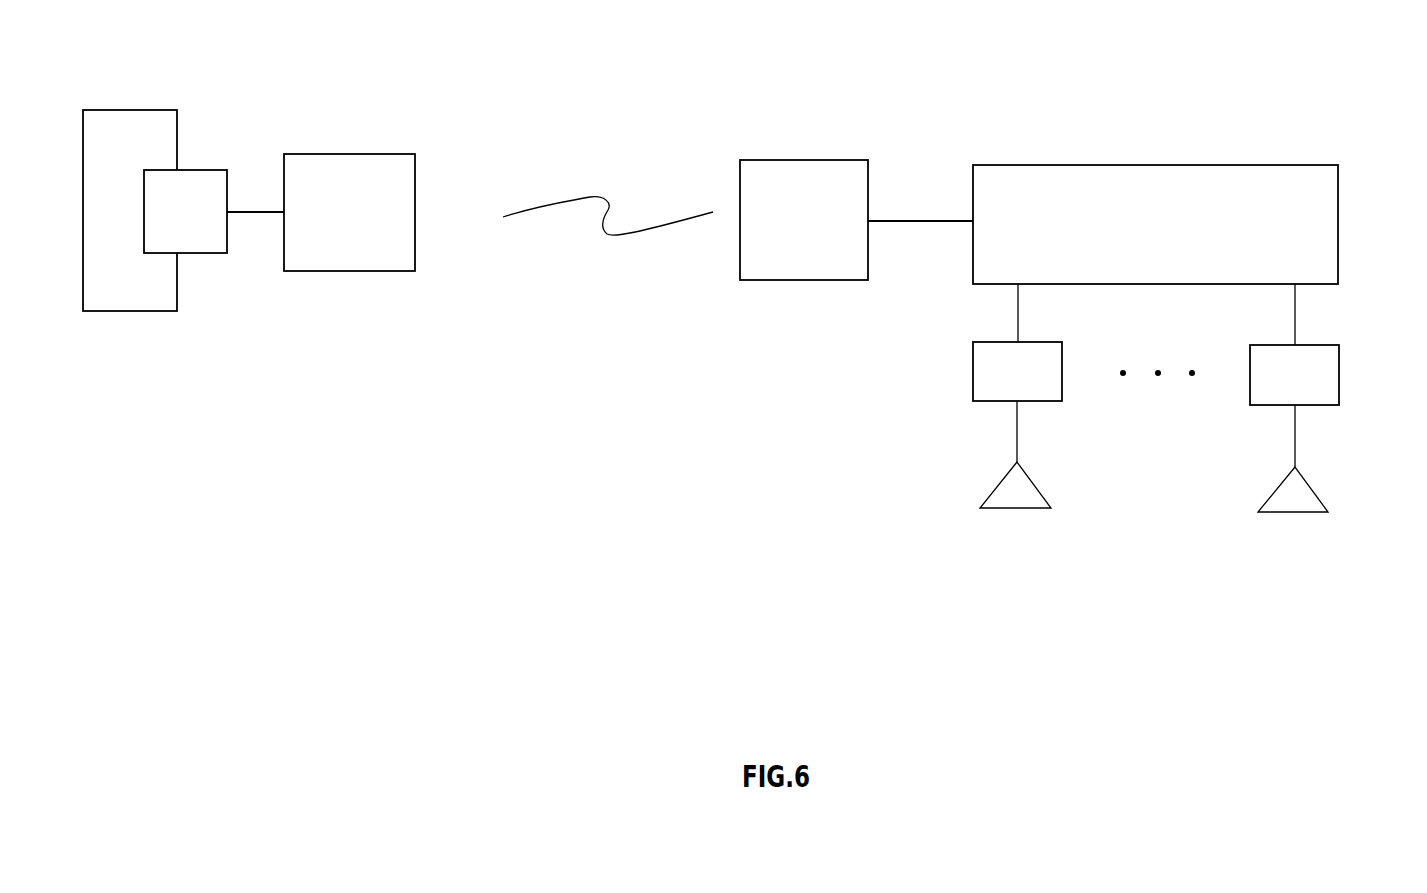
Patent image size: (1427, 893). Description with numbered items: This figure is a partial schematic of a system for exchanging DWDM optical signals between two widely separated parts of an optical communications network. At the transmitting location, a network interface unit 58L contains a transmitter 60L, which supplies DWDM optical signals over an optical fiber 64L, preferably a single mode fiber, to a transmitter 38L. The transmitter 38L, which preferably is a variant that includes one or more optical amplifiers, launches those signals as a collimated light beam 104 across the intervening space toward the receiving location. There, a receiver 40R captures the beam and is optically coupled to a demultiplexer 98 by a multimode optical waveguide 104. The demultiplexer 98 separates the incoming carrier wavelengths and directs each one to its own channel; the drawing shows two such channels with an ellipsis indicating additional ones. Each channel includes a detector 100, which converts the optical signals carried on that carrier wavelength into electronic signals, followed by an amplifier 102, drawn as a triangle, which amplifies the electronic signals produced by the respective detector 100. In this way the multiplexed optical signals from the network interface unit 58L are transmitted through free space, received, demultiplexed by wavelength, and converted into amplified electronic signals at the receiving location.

The network interface unit 58L is at (94, 225).
The transmitter 60L is at (204, 225).
The transmitter 38L is at (367, 225).
The optical fiber 64L is at (252, 212).
The collimated light beam 104 is at (592, 196).
The receiver 40R is at (785, 232).
The demultiplexer 98 is at (1170, 237).
The detector 100 is at (1036, 382).
The amplifier 102 is at (1013, 490).